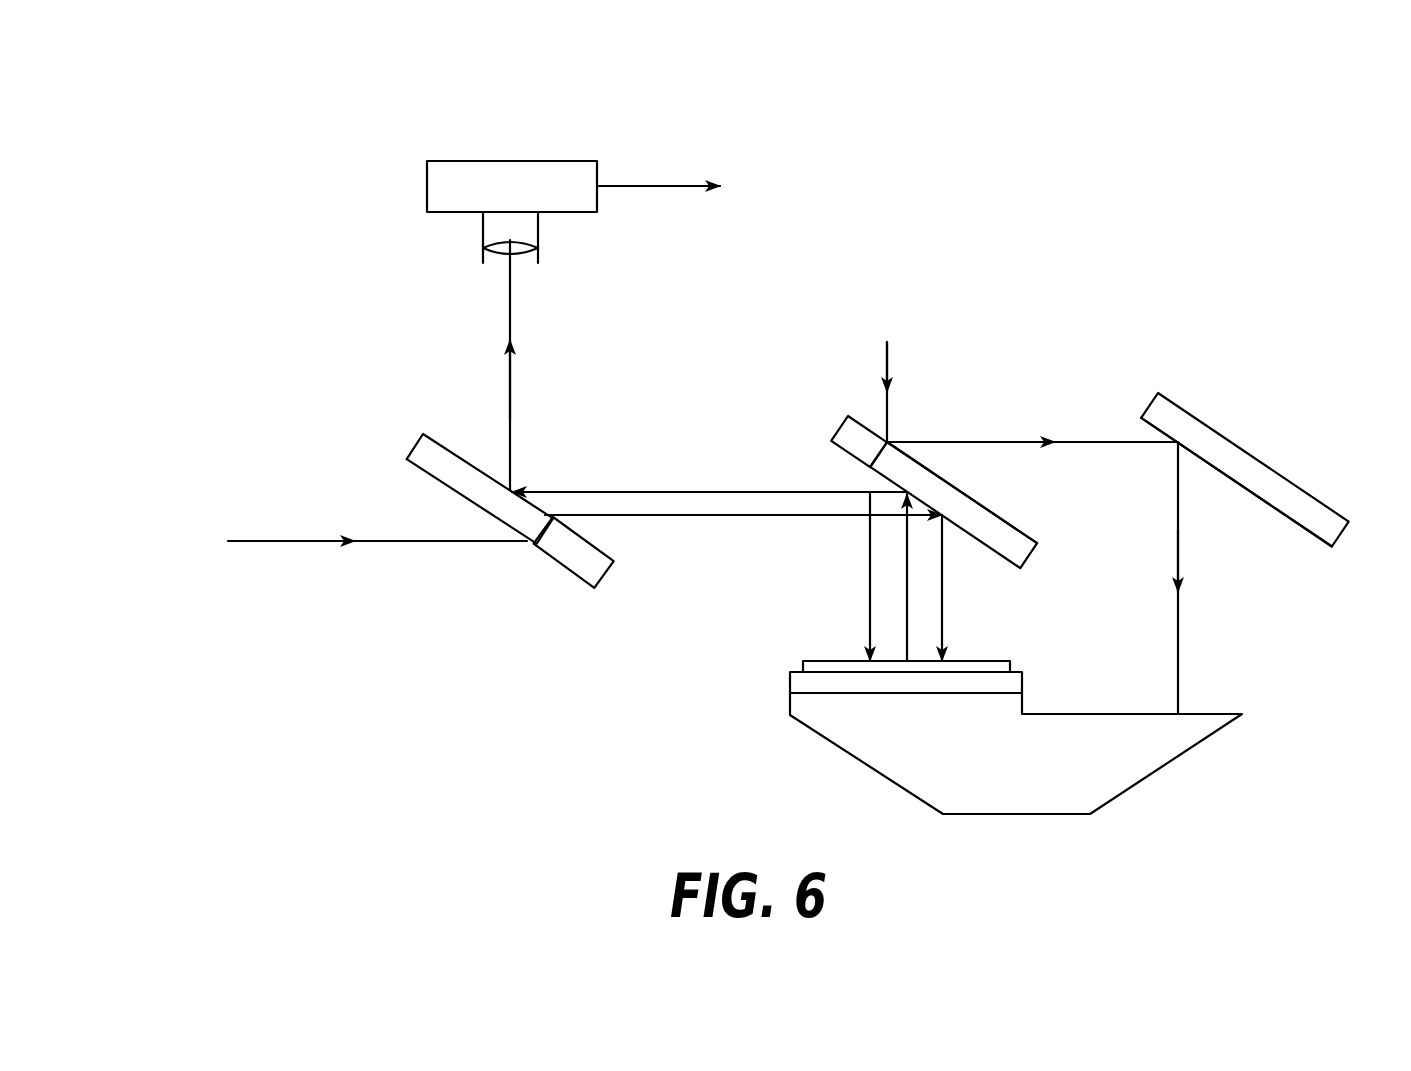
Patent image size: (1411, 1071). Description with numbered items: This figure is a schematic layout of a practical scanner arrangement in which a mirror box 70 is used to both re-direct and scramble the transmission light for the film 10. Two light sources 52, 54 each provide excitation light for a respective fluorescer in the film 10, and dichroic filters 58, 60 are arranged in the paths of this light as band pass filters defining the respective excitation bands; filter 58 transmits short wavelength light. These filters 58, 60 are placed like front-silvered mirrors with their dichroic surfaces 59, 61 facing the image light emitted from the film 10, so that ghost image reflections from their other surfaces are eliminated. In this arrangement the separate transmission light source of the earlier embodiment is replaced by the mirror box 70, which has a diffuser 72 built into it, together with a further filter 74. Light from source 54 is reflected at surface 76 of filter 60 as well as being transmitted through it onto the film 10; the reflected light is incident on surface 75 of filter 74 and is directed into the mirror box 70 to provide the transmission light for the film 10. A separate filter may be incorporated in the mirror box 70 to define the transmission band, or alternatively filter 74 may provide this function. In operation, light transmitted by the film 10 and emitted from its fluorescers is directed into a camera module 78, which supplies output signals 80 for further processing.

The film 10 is at (822, 660).
The light source 52 is at (295, 545).
The light source 54 is at (887, 358).
The filter 58 is at (450, 492).
The dichroic surface 59 is at (447, 447).
The filter 60 is at (1032, 530).
The dichroic surface 61 is at (840, 452).
The mirror box 70 is at (1170, 762).
The diffuser 72 is at (790, 683).
The filter 74 is at (1255, 455).
The surface 75 is at (1297, 522).
The surface 76 is at (957, 487).
The camera module 78 is at (562, 158).
The output signals 80 is at (648, 188).